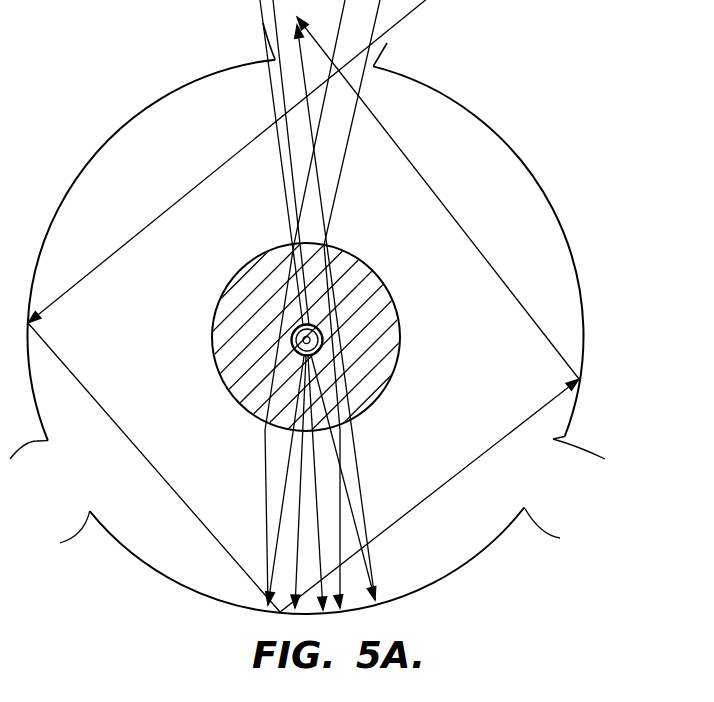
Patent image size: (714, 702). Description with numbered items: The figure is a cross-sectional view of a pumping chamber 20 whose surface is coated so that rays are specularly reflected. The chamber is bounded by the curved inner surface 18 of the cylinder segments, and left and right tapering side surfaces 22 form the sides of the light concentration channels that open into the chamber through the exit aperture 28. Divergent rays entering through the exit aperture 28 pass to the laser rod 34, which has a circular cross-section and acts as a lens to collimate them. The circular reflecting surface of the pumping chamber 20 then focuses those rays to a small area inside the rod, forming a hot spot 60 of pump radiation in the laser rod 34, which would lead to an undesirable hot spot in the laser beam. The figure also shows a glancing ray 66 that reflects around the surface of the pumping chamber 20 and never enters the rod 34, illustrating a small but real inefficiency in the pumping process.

The curved inner surface 18 is at (103, 143).
The pumping chamber 20 is at (524, 238).
The tapering side surfaces 22 is at (596, 460).
The exit aperture 28 is at (207, 57).
The laser rod 34 is at (400, 333).
The hot spot 60 is at (323, 352).
The glancing ray 66 is at (127, 245).